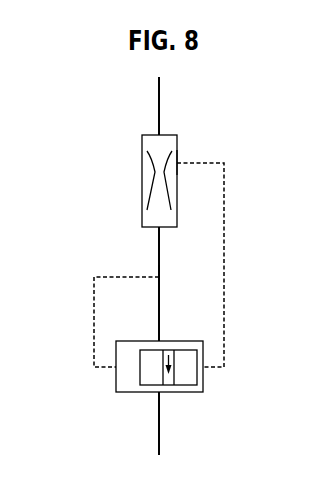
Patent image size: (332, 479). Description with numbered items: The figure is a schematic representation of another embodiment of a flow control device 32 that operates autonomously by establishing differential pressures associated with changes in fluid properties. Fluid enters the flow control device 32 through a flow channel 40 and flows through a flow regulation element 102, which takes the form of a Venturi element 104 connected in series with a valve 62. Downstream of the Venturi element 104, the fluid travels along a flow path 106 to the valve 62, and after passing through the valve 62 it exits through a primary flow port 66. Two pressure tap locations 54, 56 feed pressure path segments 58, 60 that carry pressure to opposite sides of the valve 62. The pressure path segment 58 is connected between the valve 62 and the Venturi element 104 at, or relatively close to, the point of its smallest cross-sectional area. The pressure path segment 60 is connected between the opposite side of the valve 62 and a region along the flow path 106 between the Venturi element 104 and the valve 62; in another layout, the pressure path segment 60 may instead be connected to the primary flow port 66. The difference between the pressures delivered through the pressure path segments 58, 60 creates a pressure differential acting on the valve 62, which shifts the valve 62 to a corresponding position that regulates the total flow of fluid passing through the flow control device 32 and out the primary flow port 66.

The flow control device 32 is at (208, 97).
The flow channel 40 is at (158, 100).
The flow regulation element 102 is at (136, 153).
The Venturi element 104 is at (152, 167).
The location 54 is at (182, 157).
The pressure path segment 58 is at (224, 238).
The location 56 is at (153, 270).
The pressure path segment 60 is at (94, 318).
The flow path 106 is at (160, 308).
The valve 62 is at (190, 403).
The primary flow port 66 is at (158, 430).